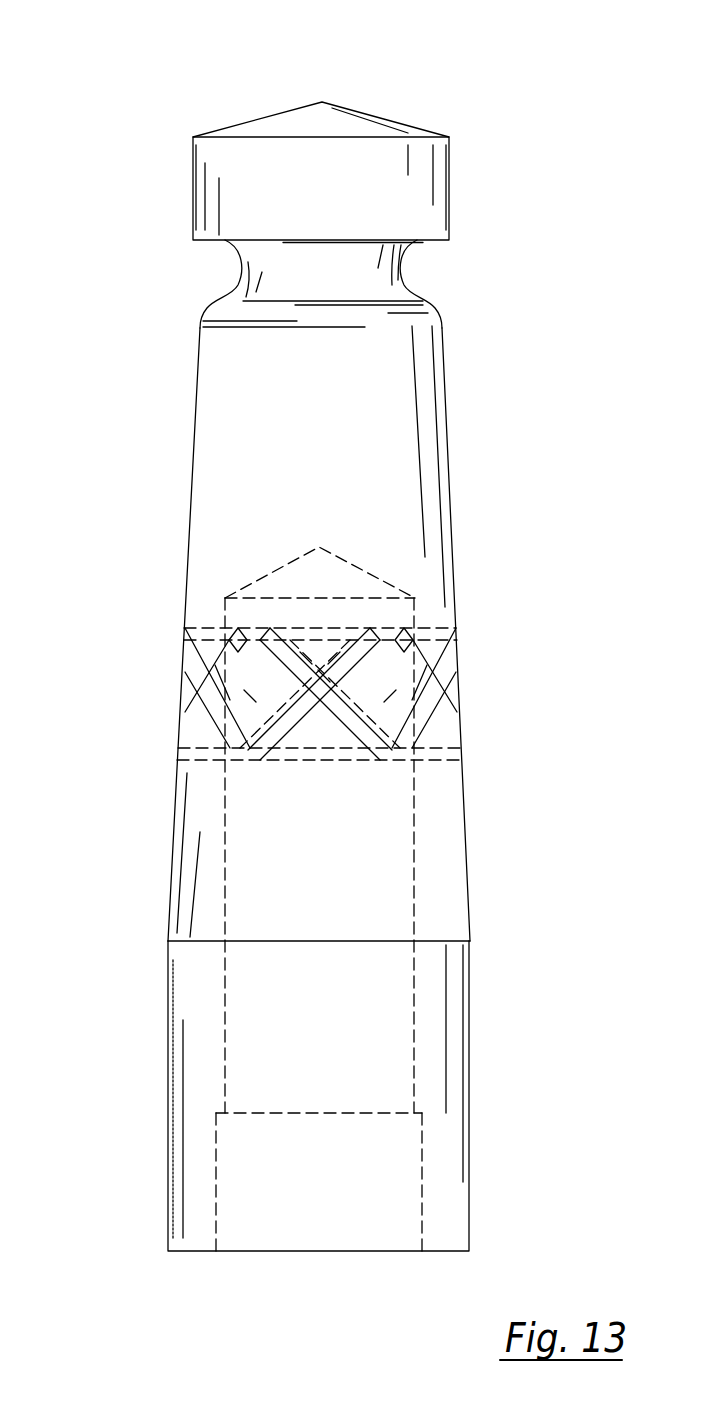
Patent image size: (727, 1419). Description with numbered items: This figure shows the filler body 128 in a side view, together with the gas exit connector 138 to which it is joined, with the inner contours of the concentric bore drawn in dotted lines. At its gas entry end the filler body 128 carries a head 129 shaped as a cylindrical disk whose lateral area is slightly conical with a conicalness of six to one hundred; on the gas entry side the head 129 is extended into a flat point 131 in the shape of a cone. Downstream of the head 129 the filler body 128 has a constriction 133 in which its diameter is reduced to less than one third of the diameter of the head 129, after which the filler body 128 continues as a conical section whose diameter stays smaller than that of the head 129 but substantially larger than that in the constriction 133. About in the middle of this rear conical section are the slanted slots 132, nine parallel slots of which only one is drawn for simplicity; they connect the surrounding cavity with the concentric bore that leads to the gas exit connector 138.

The filler body 128 is at (217, 462).
The head 129 is at (215, 182).
The flat point 131 is at (284, 127).
The slanted slots 132 is at (272, 676).
The constriction 133 is at (410, 268).
The gas exit connector 138 is at (274, 1169).